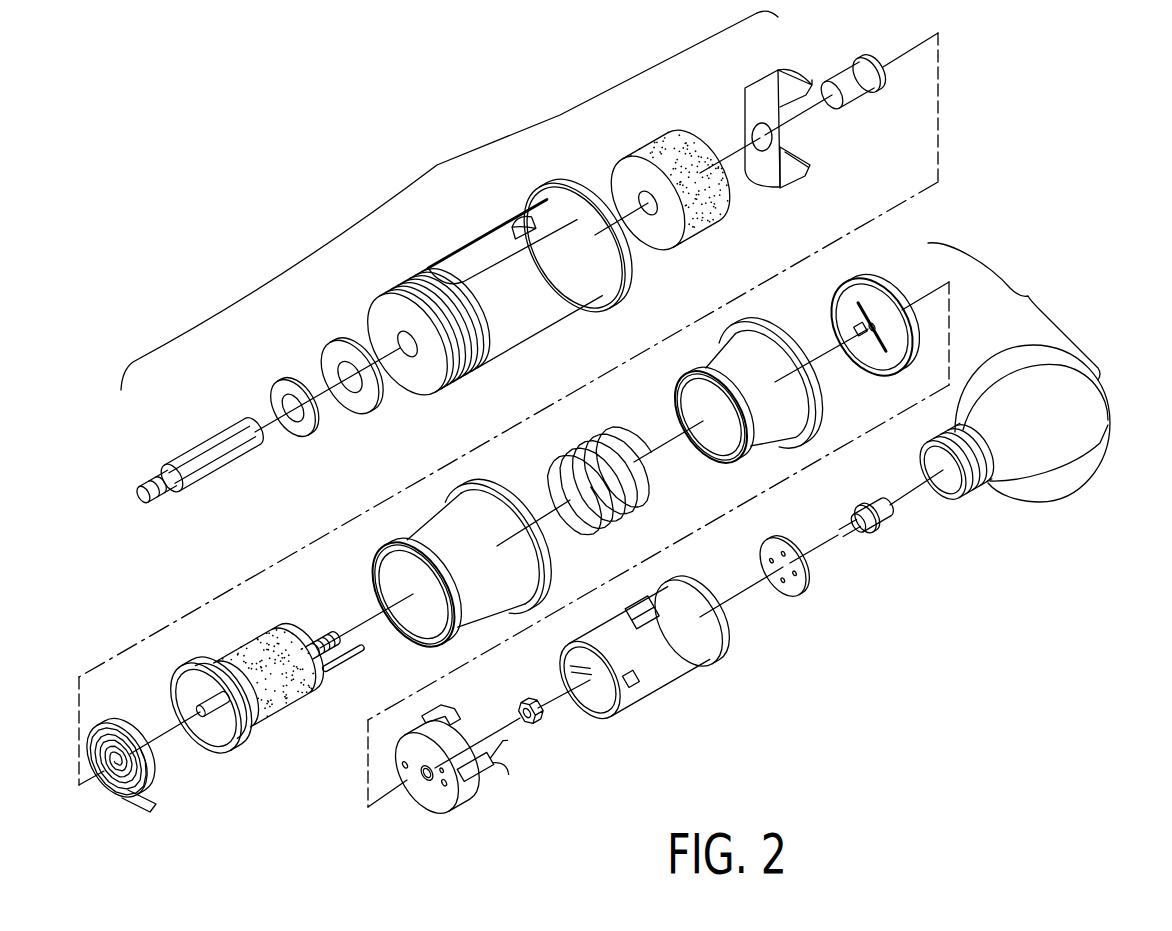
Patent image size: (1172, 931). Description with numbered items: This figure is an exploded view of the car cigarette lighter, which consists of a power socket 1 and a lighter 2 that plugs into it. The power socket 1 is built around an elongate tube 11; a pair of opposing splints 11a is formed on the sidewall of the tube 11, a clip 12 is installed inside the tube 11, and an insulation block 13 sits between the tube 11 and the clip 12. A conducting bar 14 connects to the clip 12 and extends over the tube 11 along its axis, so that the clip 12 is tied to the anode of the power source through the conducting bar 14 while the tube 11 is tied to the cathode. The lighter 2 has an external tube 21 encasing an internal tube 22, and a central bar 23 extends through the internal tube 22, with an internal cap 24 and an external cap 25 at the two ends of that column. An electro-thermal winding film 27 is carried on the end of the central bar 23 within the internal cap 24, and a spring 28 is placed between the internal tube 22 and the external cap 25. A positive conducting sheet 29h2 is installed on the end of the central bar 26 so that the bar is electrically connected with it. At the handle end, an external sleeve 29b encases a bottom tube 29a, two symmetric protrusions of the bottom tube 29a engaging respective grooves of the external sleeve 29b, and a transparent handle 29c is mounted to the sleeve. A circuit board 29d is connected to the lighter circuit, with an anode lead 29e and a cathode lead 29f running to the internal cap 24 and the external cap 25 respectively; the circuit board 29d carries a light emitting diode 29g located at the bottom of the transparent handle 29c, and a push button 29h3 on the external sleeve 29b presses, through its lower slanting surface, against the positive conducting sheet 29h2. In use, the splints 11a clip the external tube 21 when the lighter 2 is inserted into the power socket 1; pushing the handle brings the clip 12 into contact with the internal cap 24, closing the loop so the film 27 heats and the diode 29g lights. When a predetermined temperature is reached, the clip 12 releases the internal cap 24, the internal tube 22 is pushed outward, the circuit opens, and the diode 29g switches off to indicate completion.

The power socket 1 is at (437, 165).
The lighter 2 is at (1014, 311).
The elongate tube 11 is at (485, 269).
The splints 11a is at (505, 232).
The clip 12 is at (768, 80).
The insulation block 13 is at (658, 140).
The conducting bar 14 is at (200, 448).
The external tube 21 is at (483, 513).
The internal tube 22 is at (750, 360).
The central bar 23 is at (253, 647).
The internal cap 24 is at (193, 677).
The external cap 25 is at (882, 297).
The central bar 26 is at (320, 633).
The electro-thermal winding film 27 is at (130, 733).
The spring 28 is at (600, 433).
The bottom tube 29a is at (484, 779).
The external sleeve 29b is at (661, 620).
The transparent handle 29c is at (1062, 478).
The circuit board 29d is at (793, 590).
The anode lead 29e is at (347, 657).
The cathode lead 29f is at (473, 722).
The light emitting diode 29g is at (887, 517).
The positive conducting sheet 29h2 is at (502, 778).
The push button 29h3 is at (672, 590).